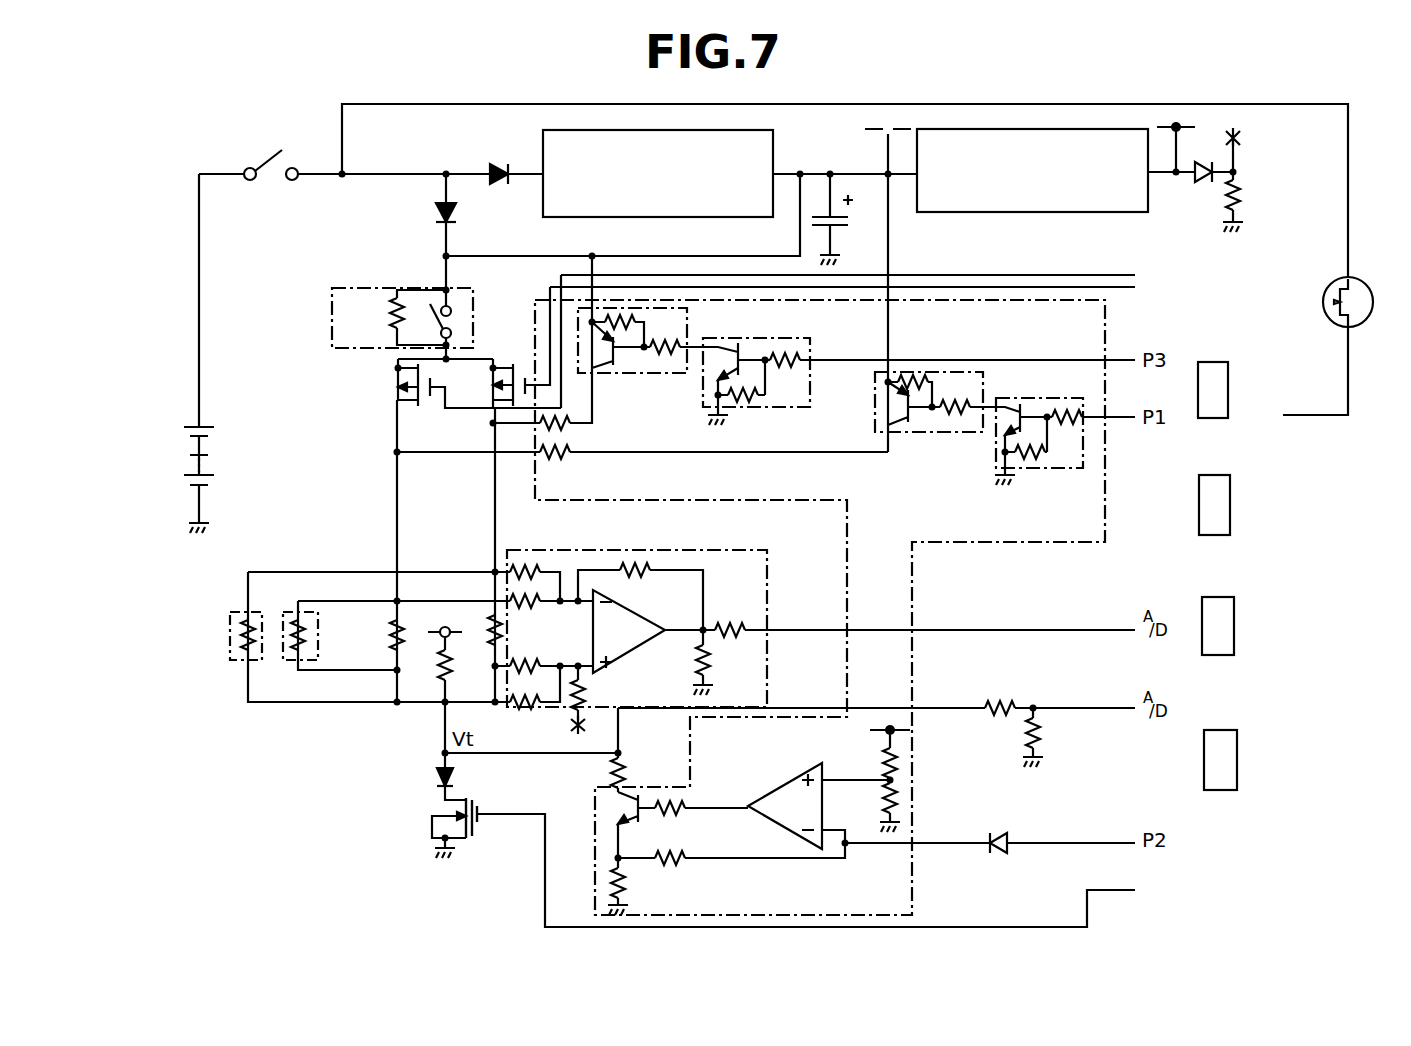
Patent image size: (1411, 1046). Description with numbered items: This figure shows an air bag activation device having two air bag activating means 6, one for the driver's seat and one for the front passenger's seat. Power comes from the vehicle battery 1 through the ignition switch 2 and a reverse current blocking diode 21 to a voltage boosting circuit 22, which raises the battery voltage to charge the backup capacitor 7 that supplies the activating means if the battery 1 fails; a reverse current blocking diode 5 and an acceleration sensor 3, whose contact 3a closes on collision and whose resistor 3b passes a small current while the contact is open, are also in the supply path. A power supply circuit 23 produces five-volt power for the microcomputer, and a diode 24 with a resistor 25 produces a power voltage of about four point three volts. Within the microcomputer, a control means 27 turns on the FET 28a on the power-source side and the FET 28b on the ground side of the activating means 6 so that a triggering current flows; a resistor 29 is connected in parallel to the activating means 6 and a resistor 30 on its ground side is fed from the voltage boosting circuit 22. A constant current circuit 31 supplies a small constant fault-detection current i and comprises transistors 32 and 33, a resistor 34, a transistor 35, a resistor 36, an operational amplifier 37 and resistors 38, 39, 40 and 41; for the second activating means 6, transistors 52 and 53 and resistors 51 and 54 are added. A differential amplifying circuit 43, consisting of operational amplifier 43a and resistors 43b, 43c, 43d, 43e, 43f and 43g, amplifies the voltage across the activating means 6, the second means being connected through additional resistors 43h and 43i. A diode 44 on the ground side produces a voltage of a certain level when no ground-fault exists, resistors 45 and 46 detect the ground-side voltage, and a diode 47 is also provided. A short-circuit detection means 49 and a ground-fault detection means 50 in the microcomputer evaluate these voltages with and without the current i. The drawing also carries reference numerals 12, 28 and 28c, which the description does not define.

The battery 1 is at (212, 440).
The ignition switch 2 is at (270, 166).
The acceleration sensor 3 is at (332, 336).
The contact 3a is at (433, 310).
The resistor 3b is at (396, 315).
The reverse current blocking diode 5 is at (436, 212).
The air bag activating means 6 is at (294, 662).
The backup capacitor 7 is at (852, 222).
The lamp 12 is at (1360, 282).
The reverse current blocking diode 21 is at (496, 172).
The voltage boosting circuit 22 is at (773, 140).
The power supply circuit 23 is at (990, 212).
The diode 24 is at (1201, 184).
The resistor 25 is at (1240, 196).
The control means 27 is at (1213, 362).
The memory register 28 is at (1210, 476).
The FET 28a is at (396, 398).
The FET 28b is at (430, 828).
The FET switch 28c is at (523, 376).
The resistor 29 is at (392, 634).
The resistor 30 is at (434, 666).
The constant current circuit 31 is at (912, 608).
The transistor 32 is at (1050, 468).
The transistor 33 is at (930, 433).
The resistor 34 is at (552, 456).
The transistor 35 is at (628, 792).
The resistor 36 is at (688, 800).
The operational amplifier 37 is at (780, 782).
The resistor 38 is at (626, 882).
The resistor 39 is at (670, 850).
The resistor 40 is at (882, 760).
The resistor 41 is at (886, 796).
The differential amplifying circuit 43 is at (767, 605).
The operational amplifier 43a is at (630, 610).
The resistor 43b is at (534, 606).
The resistor 43c is at (534, 660).
The resistor 43d is at (586, 698).
The resistor 43e is at (650, 566).
The resistor 43f is at (732, 624).
The resistor 43g is at (710, 660).
The resistor 43h is at (540, 566).
The resistor 43i is at (520, 708).
The diode 44 is at (430, 776).
The resistor 45 is at (1002, 700).
The resistor 46 is at (1040, 736).
The diode 47 is at (1000, 856).
The short-circuit detection means 49 is at (1214, 597).
The ground-fault detection means 50 is at (1216, 730).
The resistor 51 is at (492, 666).
The transistor 52 is at (810, 342).
The transistor 53 is at (688, 318).
The resistor 54 is at (575, 428).